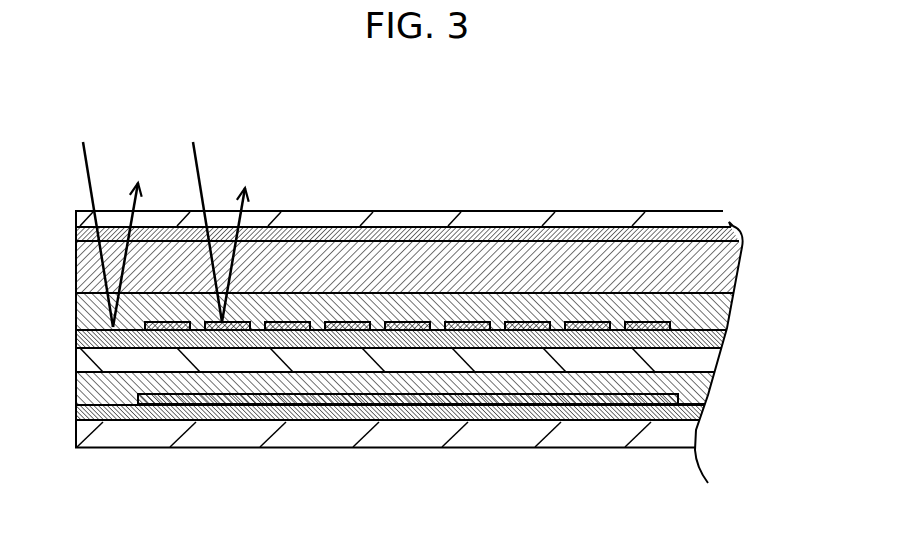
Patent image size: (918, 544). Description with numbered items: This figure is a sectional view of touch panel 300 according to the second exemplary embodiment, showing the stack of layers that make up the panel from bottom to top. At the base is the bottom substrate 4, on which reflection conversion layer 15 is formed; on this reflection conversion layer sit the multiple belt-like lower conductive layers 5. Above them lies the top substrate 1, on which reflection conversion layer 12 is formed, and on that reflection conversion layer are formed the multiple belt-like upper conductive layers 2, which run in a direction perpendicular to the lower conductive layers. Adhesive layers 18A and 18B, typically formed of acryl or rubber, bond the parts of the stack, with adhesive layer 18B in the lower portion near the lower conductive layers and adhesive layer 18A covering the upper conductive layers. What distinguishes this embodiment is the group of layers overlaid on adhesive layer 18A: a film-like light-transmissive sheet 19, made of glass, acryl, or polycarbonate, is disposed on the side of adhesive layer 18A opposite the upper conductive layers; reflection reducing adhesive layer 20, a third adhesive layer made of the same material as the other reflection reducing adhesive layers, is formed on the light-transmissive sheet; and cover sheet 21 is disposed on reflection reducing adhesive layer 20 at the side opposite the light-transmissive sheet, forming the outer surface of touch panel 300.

The touch panel 300 is at (548, 163).
The cover sheet 21 is at (378, 218).
The reflection reducing adhesive layer 20 is at (692, 233).
The light-transmissive sheet 19 is at (703, 268).
The adhesive layer 18A is at (273, 307).
The adhesive layer 18B is at (370, 380).
The upper conductive layers 2 is at (588, 323).
The reflection conversion layer 12 is at (703, 340).
The top substrate 1 is at (697, 363).
The lower conductive layers 5 is at (453, 398).
The reflection conversion layer 15 is at (493, 408).
The bottom substrate 4 is at (672, 435).